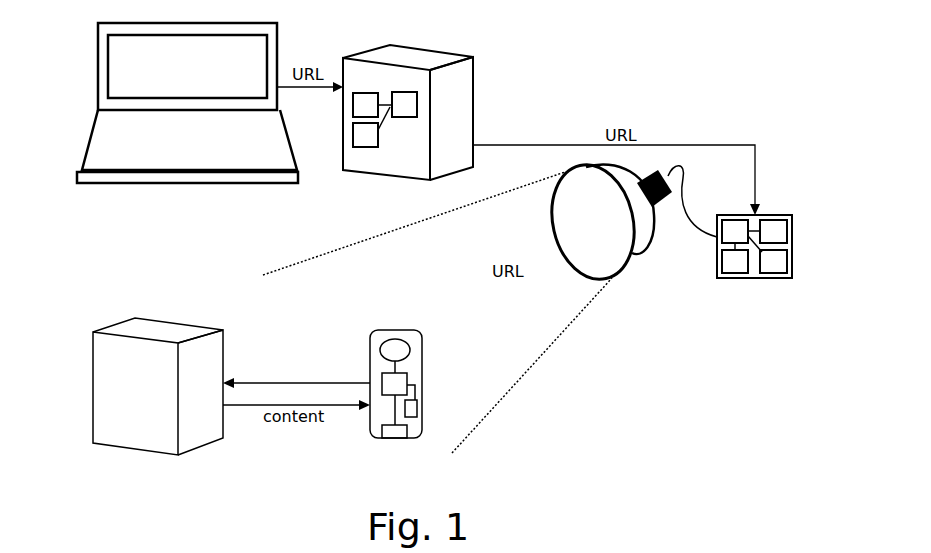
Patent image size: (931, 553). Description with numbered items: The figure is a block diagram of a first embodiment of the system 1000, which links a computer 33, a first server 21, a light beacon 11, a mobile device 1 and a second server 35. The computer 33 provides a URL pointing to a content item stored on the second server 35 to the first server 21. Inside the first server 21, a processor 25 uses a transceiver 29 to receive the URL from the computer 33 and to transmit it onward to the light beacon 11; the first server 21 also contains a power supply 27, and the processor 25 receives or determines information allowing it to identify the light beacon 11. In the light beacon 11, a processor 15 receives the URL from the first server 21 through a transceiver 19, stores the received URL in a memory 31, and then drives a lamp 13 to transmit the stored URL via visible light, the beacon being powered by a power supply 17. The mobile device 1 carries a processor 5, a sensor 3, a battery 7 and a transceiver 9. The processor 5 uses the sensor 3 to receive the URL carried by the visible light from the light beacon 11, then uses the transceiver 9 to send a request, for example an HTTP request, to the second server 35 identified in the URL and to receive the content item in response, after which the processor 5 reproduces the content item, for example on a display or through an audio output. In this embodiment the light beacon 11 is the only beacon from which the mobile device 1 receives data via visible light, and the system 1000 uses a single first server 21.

The system 1000 is at (580, 45).
The mobile device 1 is at (392, 409).
The sensor 3 is at (395, 350).
The processor 5 is at (394, 384).
The battery 7 is at (418, 410).
The transceiver 9 is at (392, 438).
The light beacon 11 is at (754, 275).
The lamp 13 is at (617, 280).
The processor 15 is at (735, 231).
The power supply 17 is at (735, 261).
The transceiver 19 is at (773, 231).
The memory 31 is at (773, 261).
The first server 21 is at (439, 112).
The processor 25 is at (404, 104).
The power supply 27 is at (365, 135).
The transceiver 29 is at (367, 98).
The computer 33 is at (187, 103).
The second server 35 is at (130, 447).